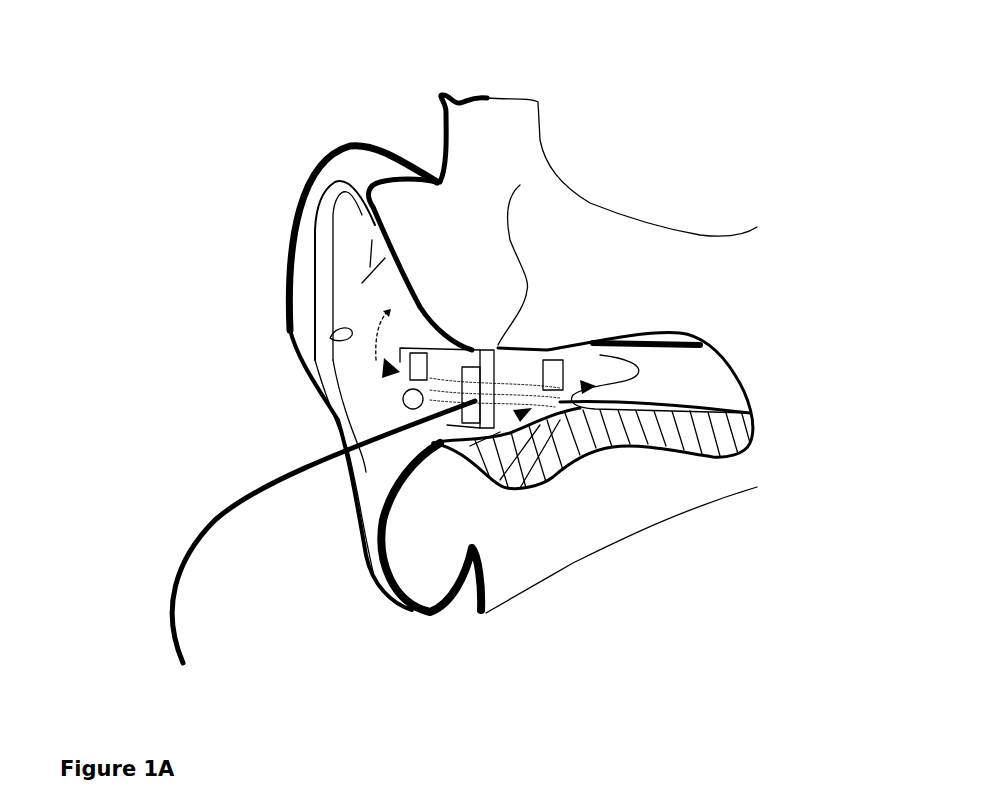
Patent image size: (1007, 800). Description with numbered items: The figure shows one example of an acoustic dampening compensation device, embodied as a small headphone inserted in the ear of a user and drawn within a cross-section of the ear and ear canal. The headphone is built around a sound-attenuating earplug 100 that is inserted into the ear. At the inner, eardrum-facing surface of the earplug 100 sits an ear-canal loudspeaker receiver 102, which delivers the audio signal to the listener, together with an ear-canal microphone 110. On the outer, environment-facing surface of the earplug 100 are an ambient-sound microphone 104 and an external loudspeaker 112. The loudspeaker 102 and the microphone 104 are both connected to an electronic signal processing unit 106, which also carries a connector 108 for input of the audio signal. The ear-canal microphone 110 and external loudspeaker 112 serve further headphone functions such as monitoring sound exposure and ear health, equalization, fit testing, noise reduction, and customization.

The sound-attenuating earplug 100 is at (537, 432).
The ear-canal loudspeaker receiver 102 is at (598, 343).
The ambient-sound microphone 104 is at (382, 414).
The electronic signal processing unit 106 is at (520, 185).
The connector 108 is at (212, 542).
The ear-canal microphone 110 is at (680, 344).
The external loudspeaker 112 is at (384, 366).